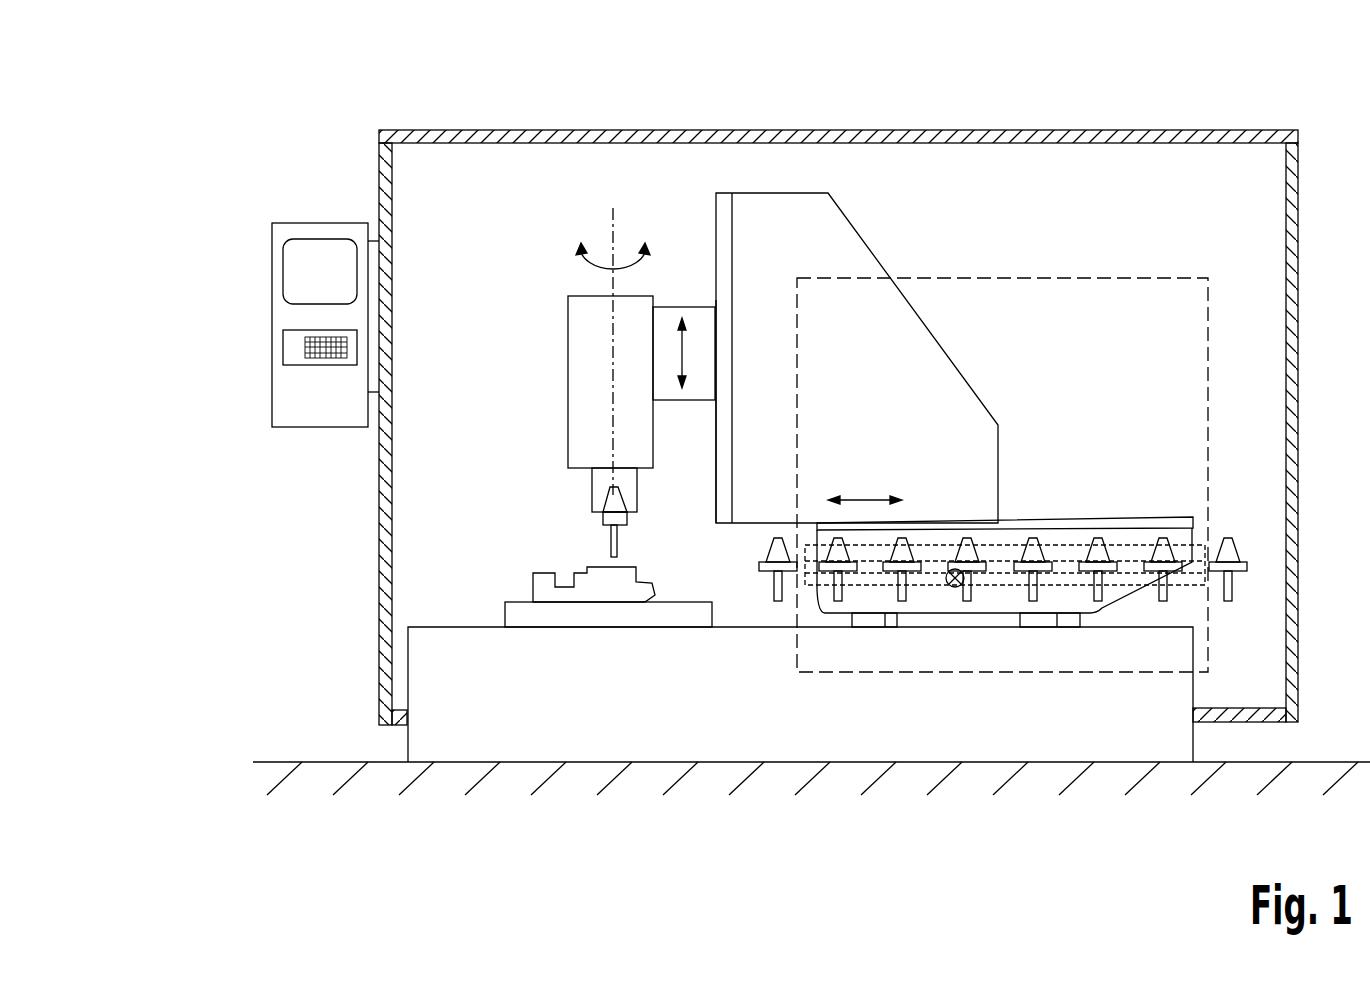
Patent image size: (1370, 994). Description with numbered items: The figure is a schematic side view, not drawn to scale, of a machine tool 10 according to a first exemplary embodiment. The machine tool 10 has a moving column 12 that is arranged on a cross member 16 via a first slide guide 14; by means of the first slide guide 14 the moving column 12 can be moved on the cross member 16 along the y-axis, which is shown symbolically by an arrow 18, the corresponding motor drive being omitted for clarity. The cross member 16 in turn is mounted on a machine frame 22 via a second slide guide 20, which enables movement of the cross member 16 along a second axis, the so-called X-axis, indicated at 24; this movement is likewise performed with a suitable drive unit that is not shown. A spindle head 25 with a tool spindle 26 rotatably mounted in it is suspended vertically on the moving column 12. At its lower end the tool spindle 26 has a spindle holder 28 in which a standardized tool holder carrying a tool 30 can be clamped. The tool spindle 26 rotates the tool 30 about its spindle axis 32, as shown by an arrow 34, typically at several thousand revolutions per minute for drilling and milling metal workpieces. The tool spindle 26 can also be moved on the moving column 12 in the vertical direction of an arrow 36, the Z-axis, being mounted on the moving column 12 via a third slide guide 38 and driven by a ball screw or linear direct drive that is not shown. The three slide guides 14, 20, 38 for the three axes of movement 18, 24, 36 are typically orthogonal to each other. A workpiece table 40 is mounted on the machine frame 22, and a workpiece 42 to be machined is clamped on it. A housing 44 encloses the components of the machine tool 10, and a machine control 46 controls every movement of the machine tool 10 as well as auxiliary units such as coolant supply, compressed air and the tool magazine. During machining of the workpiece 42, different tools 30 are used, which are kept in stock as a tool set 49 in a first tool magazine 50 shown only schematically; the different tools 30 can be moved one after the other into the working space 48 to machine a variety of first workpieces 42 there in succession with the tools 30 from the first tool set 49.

The machine tool 10 is at (714, 462).
The moving column 12 is at (836, 242).
The first slide guide 14 is at (1042, 516).
The cross member 16 is at (993, 593).
The arrow (y-axis) 18 is at (863, 500).
The second slide guide 20 is at (867, 618).
The machine frame 22 is at (717, 678).
The second axis (X-axis) 24 is at (953, 588).
The spindle head 25 is at (568, 335).
The tool spindle 26 is at (597, 478).
The spindle holder 28 is at (605, 500).
The tool 30 is at (610, 535).
The spindle axis 32 is at (612, 233).
The arrow (spindle rotation) 34 is at (578, 252).
The arrow (Z-axis) 36 is at (682, 350).
The third slide guide 38 is at (715, 468).
The workpiece table 40 is at (556, 612).
The workpiece 42 is at (607, 583).
The housing 44 is at (1108, 128).
The machine control 46 is at (272, 391).
The working space 48 is at (736, 578).
The tool set 49 is at (1068, 562).
The first tool magazine 50 is at (1130, 538).